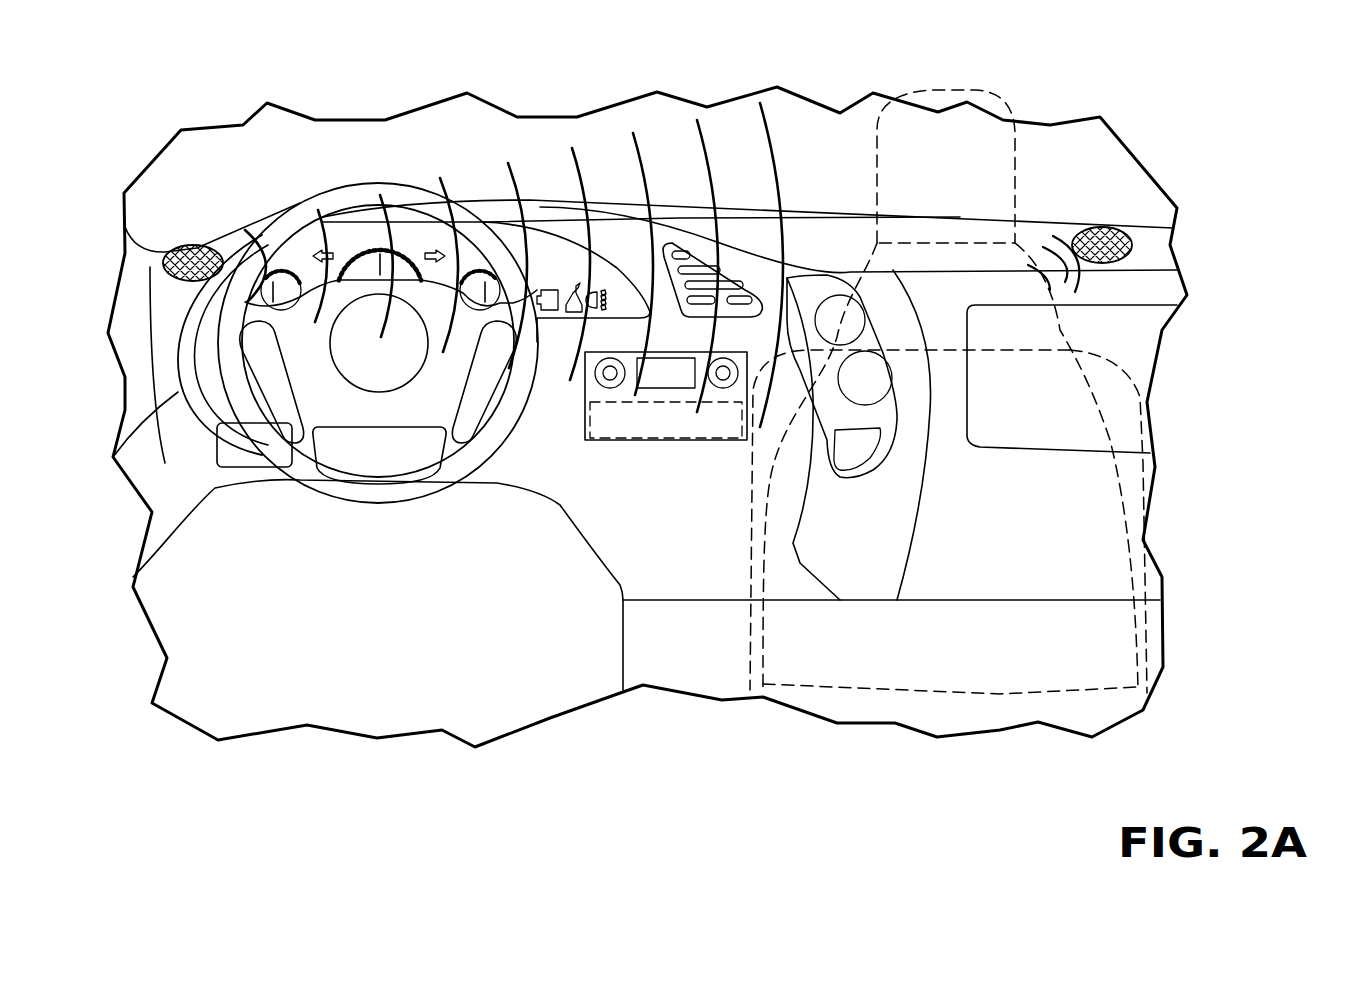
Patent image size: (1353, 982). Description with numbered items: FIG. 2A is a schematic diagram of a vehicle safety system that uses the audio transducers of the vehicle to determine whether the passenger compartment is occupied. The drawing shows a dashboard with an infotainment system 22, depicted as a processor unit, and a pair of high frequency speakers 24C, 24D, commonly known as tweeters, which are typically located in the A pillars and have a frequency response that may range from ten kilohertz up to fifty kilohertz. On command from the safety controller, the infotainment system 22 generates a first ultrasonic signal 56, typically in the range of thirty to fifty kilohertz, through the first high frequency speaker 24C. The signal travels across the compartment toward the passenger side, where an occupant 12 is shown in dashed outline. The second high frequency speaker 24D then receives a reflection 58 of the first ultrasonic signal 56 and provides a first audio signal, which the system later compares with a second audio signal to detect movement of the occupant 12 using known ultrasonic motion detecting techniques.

The occupant 12 is at (990, 102).
The infotainment system 22 is at (678, 440).
The first high frequency speaker 24C is at (182, 248).
The second high frequency speaker 24D is at (1130, 240).
The first ultrasonic signal 56 is at (517, 173).
The reflection 58 is at (1085, 278).